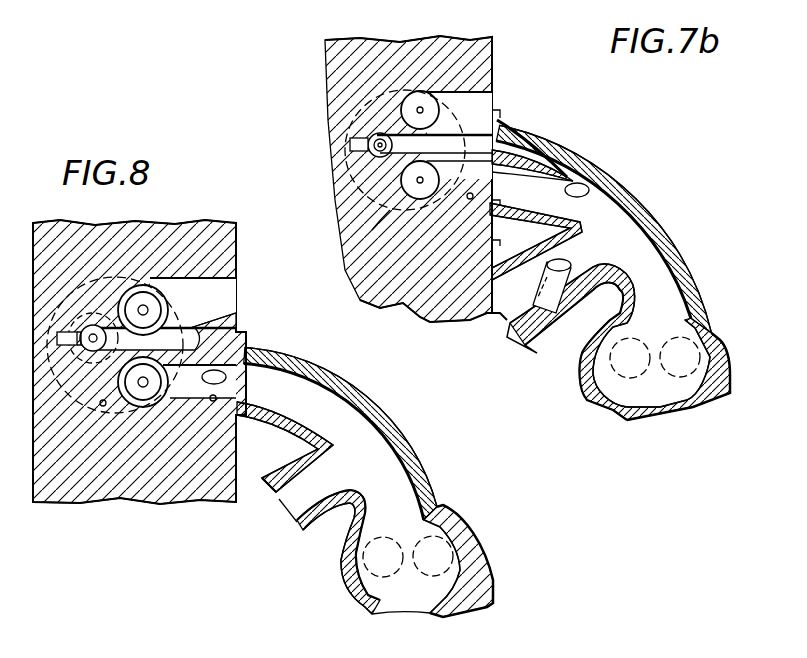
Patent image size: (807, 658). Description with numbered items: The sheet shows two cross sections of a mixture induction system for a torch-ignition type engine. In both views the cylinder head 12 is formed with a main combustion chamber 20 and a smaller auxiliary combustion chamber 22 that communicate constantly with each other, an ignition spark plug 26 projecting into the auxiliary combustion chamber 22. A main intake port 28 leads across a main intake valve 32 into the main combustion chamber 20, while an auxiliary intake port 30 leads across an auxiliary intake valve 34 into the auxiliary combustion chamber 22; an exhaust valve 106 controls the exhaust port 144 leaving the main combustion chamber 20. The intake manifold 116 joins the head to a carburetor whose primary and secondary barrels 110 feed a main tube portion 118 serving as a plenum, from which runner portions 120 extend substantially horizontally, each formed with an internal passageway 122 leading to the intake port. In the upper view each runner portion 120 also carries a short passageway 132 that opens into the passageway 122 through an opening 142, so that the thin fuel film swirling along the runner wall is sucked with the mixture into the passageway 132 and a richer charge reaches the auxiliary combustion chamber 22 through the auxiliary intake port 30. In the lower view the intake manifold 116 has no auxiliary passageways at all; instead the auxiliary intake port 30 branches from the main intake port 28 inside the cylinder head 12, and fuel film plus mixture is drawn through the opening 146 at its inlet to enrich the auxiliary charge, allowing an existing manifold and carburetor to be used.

In FIG. 8, the cylinder head 12 is at (238, 250).
In FIG. 7b, the cylinder head 12 is at (495, 41).
In FIG. 8, the main combustion chamber 20 is at (102, 407).
In FIG. 7b, the main combustion chamber 20 is at (385, 212).
In FIG. 8, the auxiliary combustion chamber 22 is at (92, 400).
In FIG. 7b, the auxiliary combustion chamber 22 is at (378, 130).
In FIG. 8, the ignition spark plug 26 is at (82, 330).
In FIG. 7b, the ignition spark plug 26 is at (366, 142).
In FIG. 8, the main intake port 28 is at (211, 402).
In FIG. 7b, the main intake port 28 is at (469, 200).
In FIG. 8, the auxiliary intake port 30 is at (240, 336).
In FIG. 7b, the auxiliary intake port 30 is at (510, 130).
In FIG. 8, the main intake valve 32 is at (143, 407).
In FIG. 7b, the main intake valve 32 is at (420, 200).
In FIG. 8, the auxiliary intake valve 34 is at (95, 320).
In FIG. 7b, the auxiliary intake valve 34 is at (362, 160).
In FIG. 8, the exhaust valve 106 is at (144, 285).
In FIG. 7b, the exhaust valve 106 is at (445, 70).
In FIG. 8, the primary barrel 110 is at (378, 577).
In FIG. 7b, the primary barrel 110 is at (625, 380).
In FIG. 8, the intake manifold 116 is at (438, 486).
In FIG. 7b, the intake manifold 116 is at (700, 275).
In FIG. 8, the main tube portion 118 is at (487, 540).
In FIG. 7b, the main tube portion 118 is at (731, 367).
In FIG. 8, the runner portion 120 is at (318, 384).
In FIG. 7b, the runner portion 120 is at (606, 186).
In FIG. 8, the passageway 122 is at (343, 405).
In FIG. 7b, the passageway 122 is at (520, 190).
In FIG. 7b, the passageway 132 is at (540, 165).
In FIG. 7b, the opening 142 is at (590, 191).
In FIG. 8, the exhaust port 144 is at (237, 280).
In FIG. 7b, the exhaust port 144 is at (493, 100).
In FIG. 8, the opening 146 is at (226, 380).